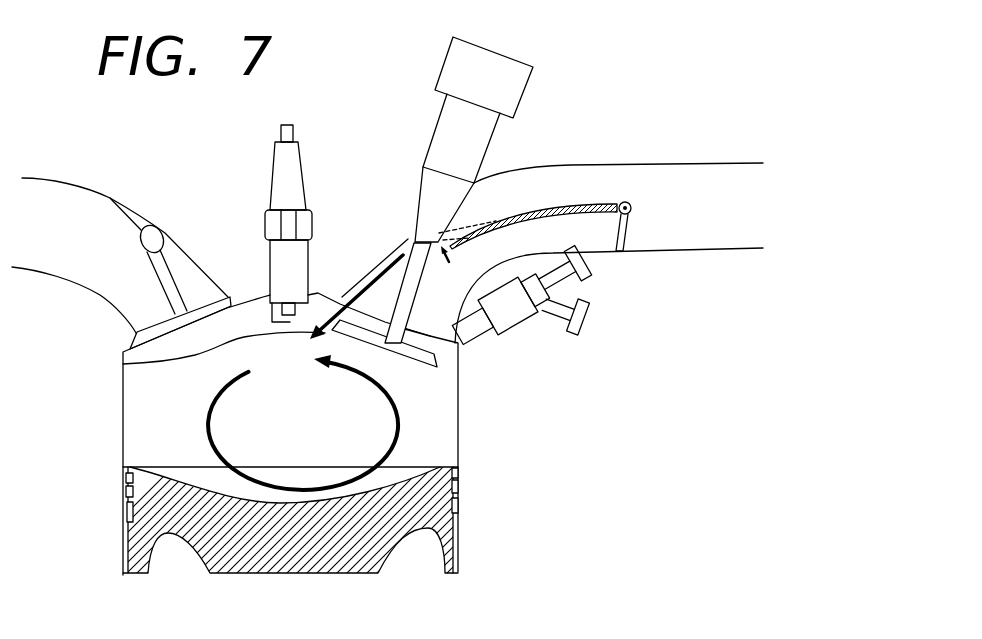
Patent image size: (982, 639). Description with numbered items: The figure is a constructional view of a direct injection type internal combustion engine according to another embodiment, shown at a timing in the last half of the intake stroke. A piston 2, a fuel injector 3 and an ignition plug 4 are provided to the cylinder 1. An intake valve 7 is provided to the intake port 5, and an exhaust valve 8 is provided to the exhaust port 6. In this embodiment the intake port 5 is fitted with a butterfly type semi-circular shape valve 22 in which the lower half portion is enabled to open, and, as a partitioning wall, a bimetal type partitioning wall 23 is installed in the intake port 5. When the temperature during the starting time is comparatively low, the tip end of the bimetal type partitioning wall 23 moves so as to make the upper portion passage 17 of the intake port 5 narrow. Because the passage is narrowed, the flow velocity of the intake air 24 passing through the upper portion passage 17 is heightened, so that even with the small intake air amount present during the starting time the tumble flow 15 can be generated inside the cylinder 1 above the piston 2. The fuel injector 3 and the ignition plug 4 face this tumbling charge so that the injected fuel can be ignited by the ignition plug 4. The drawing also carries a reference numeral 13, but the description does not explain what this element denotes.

The cylinder 1 is at (123, 410).
The piston 2 is at (455, 527).
The fuel injector 3 is at (520, 331).
The ignition plug 4 is at (265, 220).
The intake port 5 is at (398, 233).
The exhaust port 6 is at (85, 182).
The intake valve 7 is at (437, 358).
The exhaust valve 8 is at (135, 327).
The fuel injector 13 is at (443, 62).
The tumble flow 15 is at (210, 419).
The upper portion passage 17 is at (553, 188).
The butterfly type semi-circular shape valve 22 is at (626, 235).
The bimetal type partitioning wall 23 is at (560, 216).
The intake air 24 is at (123, 363).